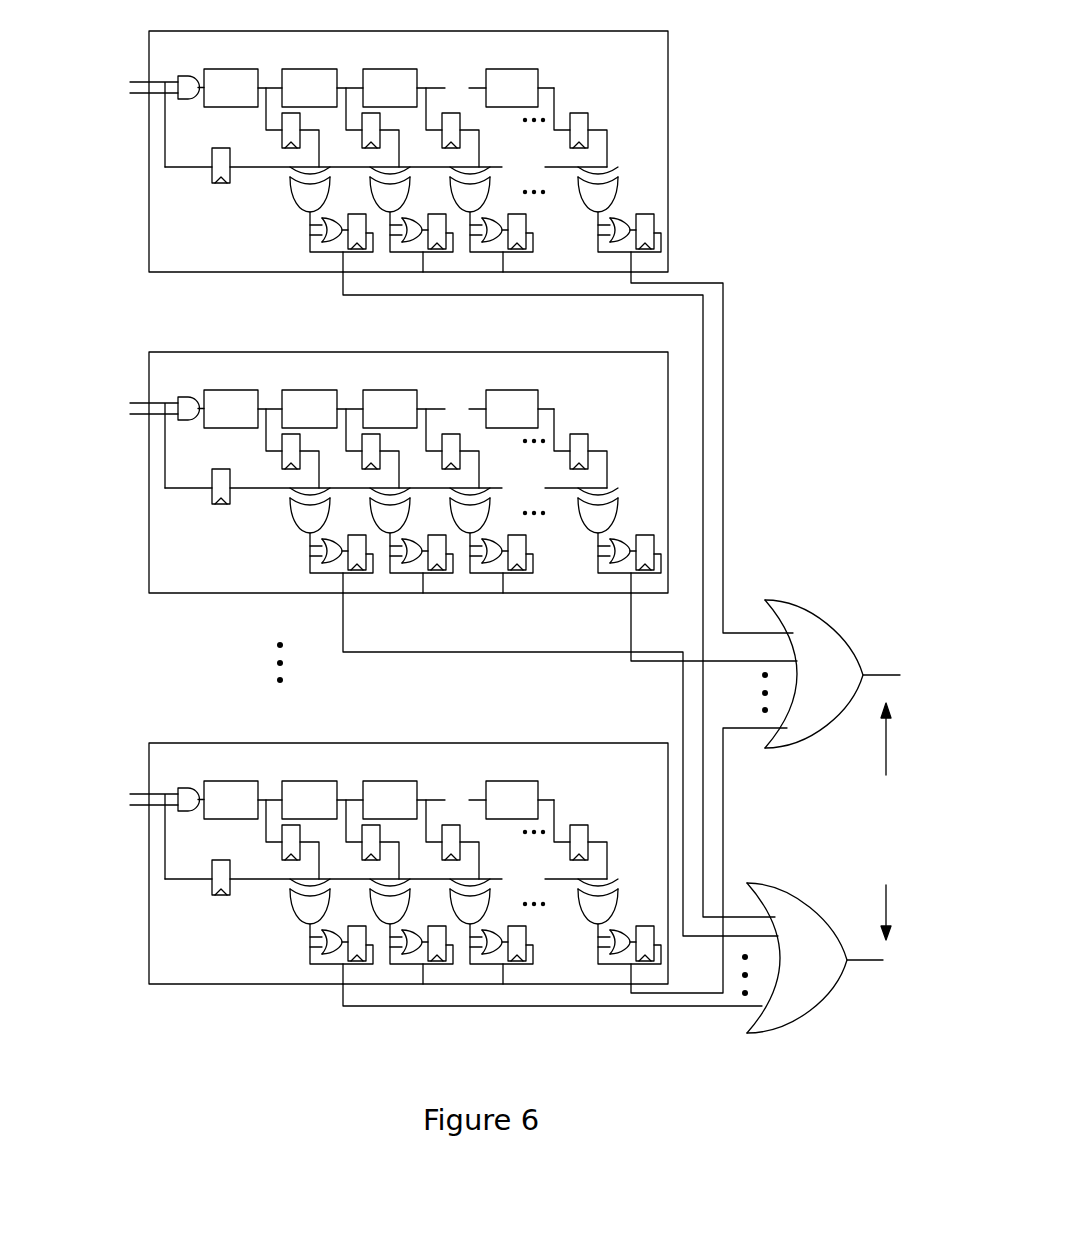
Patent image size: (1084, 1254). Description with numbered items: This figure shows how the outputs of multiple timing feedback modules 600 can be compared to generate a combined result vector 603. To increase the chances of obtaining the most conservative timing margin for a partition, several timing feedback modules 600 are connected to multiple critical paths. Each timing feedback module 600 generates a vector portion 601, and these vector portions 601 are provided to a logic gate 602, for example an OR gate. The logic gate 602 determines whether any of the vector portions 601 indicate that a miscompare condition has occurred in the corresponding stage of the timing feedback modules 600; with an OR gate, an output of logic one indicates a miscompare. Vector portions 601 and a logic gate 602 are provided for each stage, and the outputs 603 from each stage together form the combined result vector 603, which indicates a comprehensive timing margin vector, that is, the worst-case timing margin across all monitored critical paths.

The timing feedback module 600 is at (356, 507).
The vector portion 601 is at (543, 664).
The logic gate 602 is at (821, 816).
The combined result vector 603 is at (886, 821).